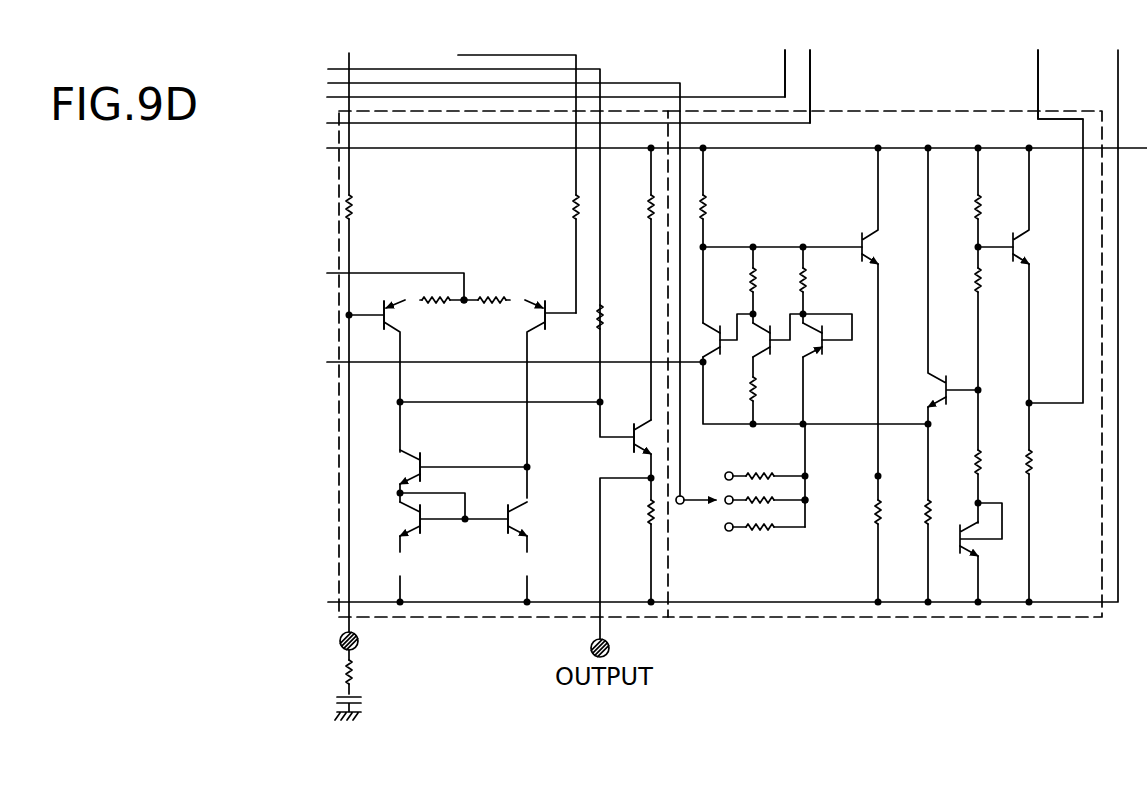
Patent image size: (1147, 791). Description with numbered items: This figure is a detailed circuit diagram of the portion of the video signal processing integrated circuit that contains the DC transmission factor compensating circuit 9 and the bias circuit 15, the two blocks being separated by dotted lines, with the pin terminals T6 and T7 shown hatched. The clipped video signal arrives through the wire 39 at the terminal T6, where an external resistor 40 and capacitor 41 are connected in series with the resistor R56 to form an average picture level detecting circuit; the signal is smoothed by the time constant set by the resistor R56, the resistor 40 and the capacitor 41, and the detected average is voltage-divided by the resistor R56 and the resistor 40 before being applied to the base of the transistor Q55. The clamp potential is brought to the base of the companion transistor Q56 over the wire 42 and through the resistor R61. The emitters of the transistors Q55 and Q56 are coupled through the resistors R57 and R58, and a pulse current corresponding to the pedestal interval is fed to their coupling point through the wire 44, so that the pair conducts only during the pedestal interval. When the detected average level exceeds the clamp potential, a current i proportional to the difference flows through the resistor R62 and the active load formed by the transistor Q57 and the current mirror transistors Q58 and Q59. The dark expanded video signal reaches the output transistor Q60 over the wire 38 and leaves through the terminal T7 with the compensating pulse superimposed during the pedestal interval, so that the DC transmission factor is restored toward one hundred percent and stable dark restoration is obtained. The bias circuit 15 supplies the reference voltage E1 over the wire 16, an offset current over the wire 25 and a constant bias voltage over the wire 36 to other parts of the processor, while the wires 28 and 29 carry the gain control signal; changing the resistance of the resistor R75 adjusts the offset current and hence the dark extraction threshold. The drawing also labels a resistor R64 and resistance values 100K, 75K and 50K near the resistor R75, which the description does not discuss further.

The wire 39 is at (328, 69).
The wire 38 is at (328, 83).
The wire 25 is at (327, 97).
The wire 42 is at (578, 58).
The wire 28 is at (785, 70).
The wire 29 is at (812, 70).
The wire 36 is at (1060, 119).
The resistor R56 is at (352, 216).
The resistor R61 is at (573, 210).
The resistor R64 is at (648, 210).
The wire 44 is at (464, 273).
The resistor R57 is at (437, 306).
The resistor R58 is at (496, 304).
The transistor Q55 is at (382, 329).
The transistor Q56 is at (548, 330).
The resistor R62 is at (604, 328).
The wire 16 is at (332, 364).
The reference voltage E1 is at (366, 368).
The current i is at (593, 377).
The transistor Q57 is at (420, 452).
The output transistor Q60 is at (632, 437).
The current mirror transistor Q58 is at (420, 534).
The current mirror transistor Q59 is at (512, 528).
The resistor 100K is at (760, 464).
The resistor 75K is at (760, 500).
The resistor 50K is at (748, 532).
The resistor R75 is at (811, 506).
The terminal T6 is at (360, 641).
The resistor 40 is at (344, 678).
The capacitor 41 is at (358, 700).
The DC transmission factor compensating circuit 9 is at (570, 617).
The bias circuit 15 is at (912, 612).
The terminal T7 is at (612, 646).